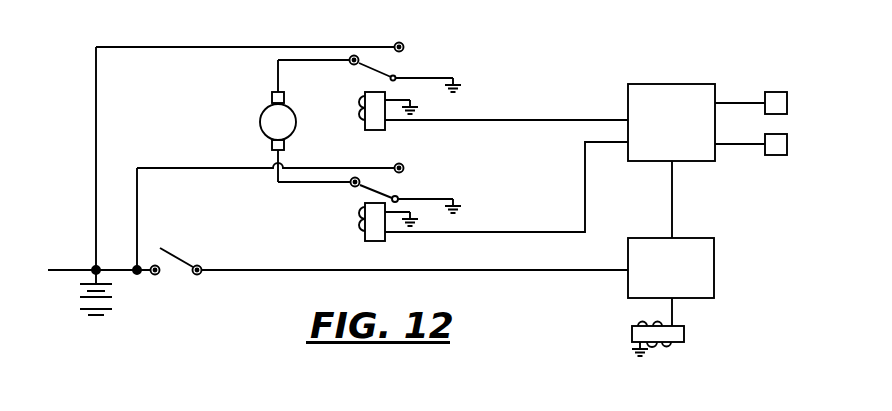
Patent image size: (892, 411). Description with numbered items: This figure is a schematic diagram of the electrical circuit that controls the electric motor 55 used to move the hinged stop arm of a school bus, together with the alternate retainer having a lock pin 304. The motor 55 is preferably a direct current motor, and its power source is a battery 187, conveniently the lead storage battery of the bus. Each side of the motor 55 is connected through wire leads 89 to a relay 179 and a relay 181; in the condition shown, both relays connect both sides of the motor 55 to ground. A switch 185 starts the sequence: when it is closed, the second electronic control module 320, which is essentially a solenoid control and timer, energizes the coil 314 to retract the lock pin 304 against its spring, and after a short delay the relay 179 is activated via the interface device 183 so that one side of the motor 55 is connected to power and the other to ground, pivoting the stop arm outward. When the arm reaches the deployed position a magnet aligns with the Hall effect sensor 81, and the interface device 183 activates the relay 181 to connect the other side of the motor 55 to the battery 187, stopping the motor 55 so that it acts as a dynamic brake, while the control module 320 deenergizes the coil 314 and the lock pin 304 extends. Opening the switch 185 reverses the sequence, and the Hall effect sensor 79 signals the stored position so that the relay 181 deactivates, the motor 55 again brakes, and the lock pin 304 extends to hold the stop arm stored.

The wire leads 89 is at (309, 55).
The relay 181 is at (350, 91).
The electric motor 55 is at (262, 122).
The relay 179 is at (350, 214).
The switch 185 is at (172, 254).
The battery 187 is at (112, 298).
The interface device 183 is at (693, 153).
The Hall effect sensor 81 is at (777, 104).
The Hall effect sensor 79 is at (777, 146).
The second electronic control module 320 is at (704, 285).
The lock pin 304 is at (632, 331).
The coil 314 is at (662, 348).